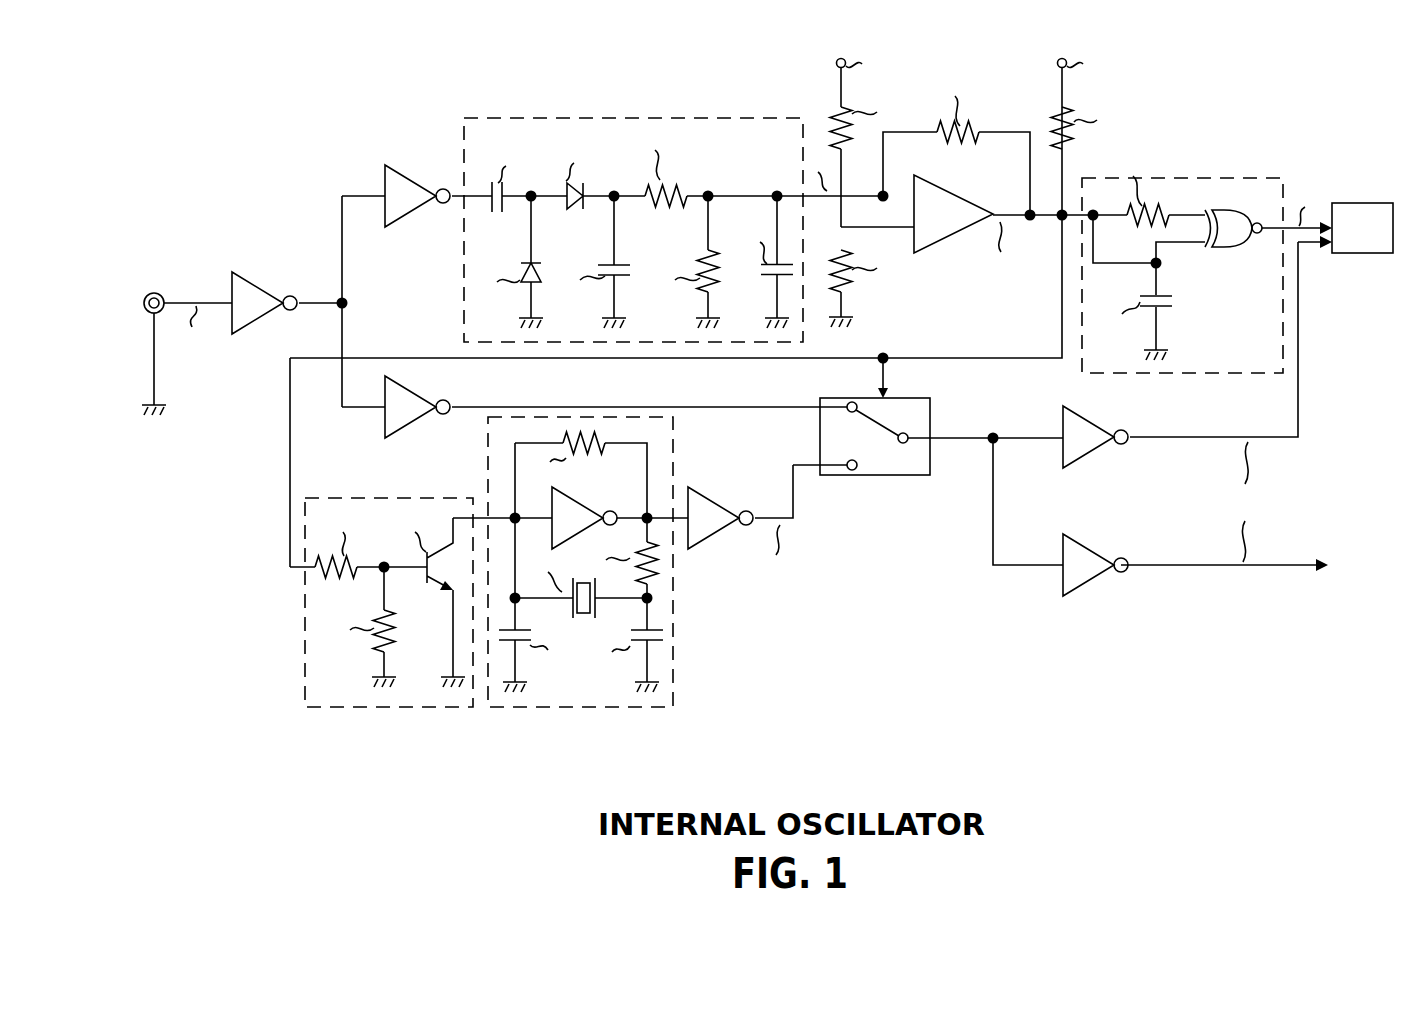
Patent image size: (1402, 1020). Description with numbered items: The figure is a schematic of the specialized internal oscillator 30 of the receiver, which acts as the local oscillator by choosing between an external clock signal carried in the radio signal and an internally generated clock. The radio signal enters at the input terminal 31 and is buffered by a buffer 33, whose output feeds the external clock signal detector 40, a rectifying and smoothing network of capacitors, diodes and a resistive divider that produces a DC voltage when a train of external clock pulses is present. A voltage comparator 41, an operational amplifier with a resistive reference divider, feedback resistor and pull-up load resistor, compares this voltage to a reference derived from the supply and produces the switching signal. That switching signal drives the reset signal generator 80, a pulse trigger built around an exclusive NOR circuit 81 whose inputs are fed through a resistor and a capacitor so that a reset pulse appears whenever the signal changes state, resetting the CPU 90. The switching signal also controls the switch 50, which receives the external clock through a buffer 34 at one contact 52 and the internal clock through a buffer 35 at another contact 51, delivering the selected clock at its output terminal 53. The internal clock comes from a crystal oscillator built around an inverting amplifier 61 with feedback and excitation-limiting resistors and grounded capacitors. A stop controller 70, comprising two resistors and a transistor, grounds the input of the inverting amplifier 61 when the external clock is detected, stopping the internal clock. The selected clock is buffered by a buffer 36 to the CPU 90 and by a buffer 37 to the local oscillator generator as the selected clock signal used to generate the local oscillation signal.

The specialized internal oscillator 30 is at (651, 31).
The input terminal 31 is at (157, 293).
The buffer 33 is at (239, 280).
The buffer 34 is at (380, 438).
The buffer 35 is at (697, 497).
The buffer 36 is at (1090, 426).
The buffer 37 is at (1078, 546).
The external clock signal detector 40 is at (718, 117).
The voltage comparator 41 is at (958, 243).
The switch 50 is at (909, 498).
The switch contact 51 is at (846, 474).
The switch contact 52 is at (848, 399).
The output terminal 53 is at (910, 436).
The inverting amplifier 61 is at (590, 510).
The stop controller 70 is at (700, 662).
The reset signal generator 80 is at (1250, 178).
The exclusive NOR circuit 81 is at (1222, 252).
The CPU 90 is at (1362, 258).